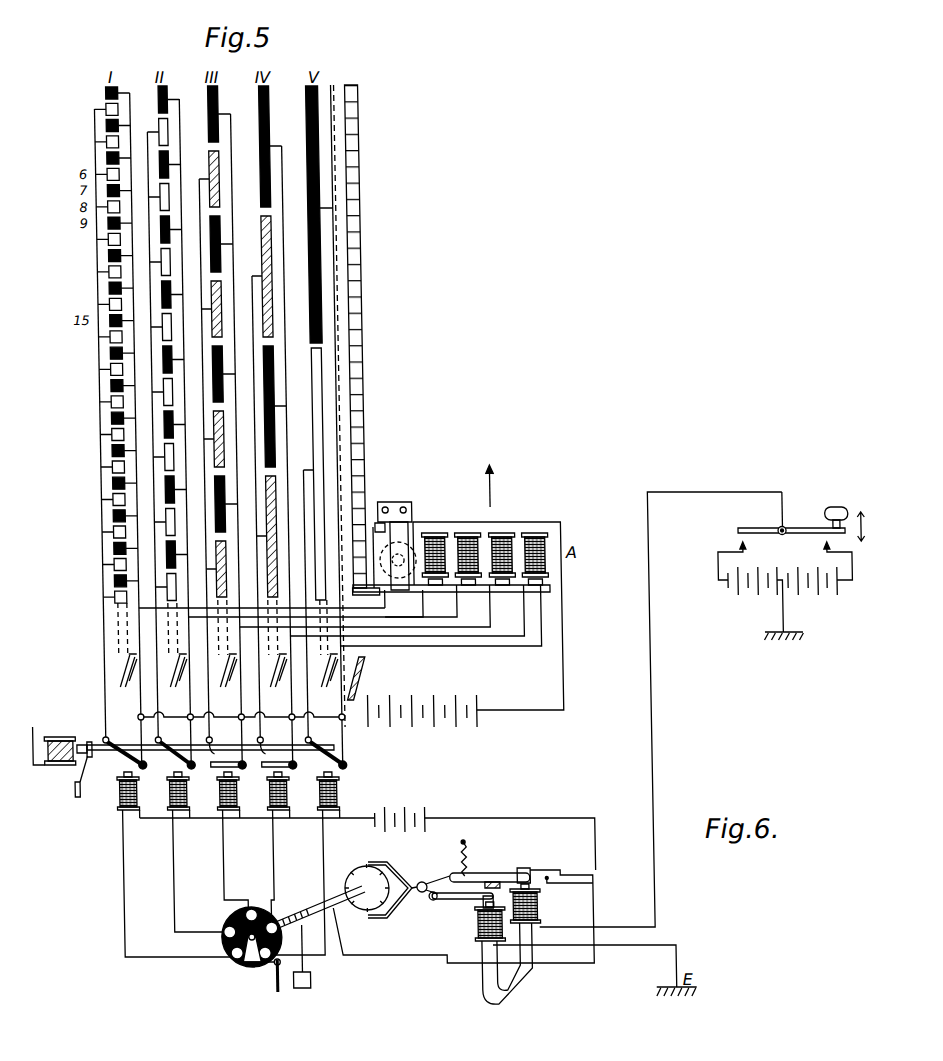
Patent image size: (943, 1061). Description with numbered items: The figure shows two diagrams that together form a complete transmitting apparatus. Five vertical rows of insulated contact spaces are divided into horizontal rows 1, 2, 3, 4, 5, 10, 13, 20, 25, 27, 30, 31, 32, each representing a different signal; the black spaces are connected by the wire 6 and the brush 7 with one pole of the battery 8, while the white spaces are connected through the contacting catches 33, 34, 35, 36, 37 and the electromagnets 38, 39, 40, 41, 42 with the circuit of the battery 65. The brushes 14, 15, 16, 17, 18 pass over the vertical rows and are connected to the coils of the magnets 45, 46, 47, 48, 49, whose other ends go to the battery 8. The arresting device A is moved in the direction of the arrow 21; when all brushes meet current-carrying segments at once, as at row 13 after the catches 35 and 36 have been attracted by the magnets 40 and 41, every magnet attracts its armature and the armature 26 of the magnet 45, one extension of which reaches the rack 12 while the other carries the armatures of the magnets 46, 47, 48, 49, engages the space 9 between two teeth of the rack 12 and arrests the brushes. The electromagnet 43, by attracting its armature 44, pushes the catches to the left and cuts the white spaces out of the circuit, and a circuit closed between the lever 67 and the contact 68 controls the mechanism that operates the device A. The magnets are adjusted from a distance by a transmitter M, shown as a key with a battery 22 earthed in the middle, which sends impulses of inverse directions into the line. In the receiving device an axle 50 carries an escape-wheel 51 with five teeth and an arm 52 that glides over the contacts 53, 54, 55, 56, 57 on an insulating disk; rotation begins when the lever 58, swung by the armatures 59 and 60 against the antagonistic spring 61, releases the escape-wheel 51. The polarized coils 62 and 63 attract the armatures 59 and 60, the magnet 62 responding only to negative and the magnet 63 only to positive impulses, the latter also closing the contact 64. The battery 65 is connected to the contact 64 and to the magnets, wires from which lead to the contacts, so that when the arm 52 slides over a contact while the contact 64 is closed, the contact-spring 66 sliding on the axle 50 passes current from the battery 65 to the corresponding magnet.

In FIG. 5, the horizontal row 1 is at (103, 93).
In FIG. 5, the horizontal row 2 is at (98, 109).
In FIG. 5, the horizontal row 3 is at (104, 125).
In FIG. 5, the horizontal row 4 is at (98, 142).
In FIG. 5, the horizontal row 5 is at (104, 158).
In FIG. 5, the horizontal row 10 is at (96, 239).
In FIG. 5, the horizontal row 13 is at (103, 288).
In FIG. 5, the horizontal row 20 is at (99, 402).
In FIG. 5, the horizontal row 25 is at (106, 483).
In FIG. 5, the horizontal row 27 is at (107, 516).
In FIG. 5, the horizontal row 30 is at (101, 564).
In FIG. 5, the horizontal row 31 is at (108, 581).
In FIG. 5, the horizontal row 32 is at (102, 597).
In FIG. 5, the wire 6 is at (129, 363).
In FIG. 5, the brush 7 is at (352, 681).
In FIG. 5, the battery 8 is at (422, 701).
In FIG. 5, the space between two teeth of the rack 9 is at (357, 350).
In FIG. 5, the rack 12 is at (357, 490).
In FIG. 5, the spring or brush 14 is at (125, 682).
In FIG. 5, the spring or brush 15 is at (175, 681).
In FIG. 5, the spring or brush 16 is at (225, 681).
In FIG. 5, the spring or brush 17 is at (275, 681).
In FIG. 5, the spring or brush 18 is at (325, 681).
In FIG. 5, the arrow 21 is at (500, 486).
In FIG. 6, the battery 22 is at (791, 566).
In FIG. 5, the armature 26 is at (390, 530).
In FIG. 5, the contacting catch 33 is at (125, 750).
In FIG. 5, the contacting catch 34 is at (175, 750).
In FIG. 5, the contacting catch 35 is at (226, 750).
In FIG. 5, the contacting catch 36 is at (277, 750).
In FIG. 5, the contacting catch 37 is at (326, 750).
In FIG. 5, the electromagnet 38 is at (123, 798).
In FIG. 5, the electromagnet 39 is at (173, 798).
In FIG. 5, the electromagnet 40 is at (223, 798).
In FIG. 5, the electromagnet 41 is at (273, 798).
In FIG. 5, the electromagnet 42 is at (323, 798).
In FIG. 5, the electromagnet 43 is at (62, 744).
In FIG. 5, the armature 44 is at (92, 776).
In FIG. 5, the magnet 45 is at (392, 560).
In FIG. 5, the electromagnet 46 is at (427, 533).
In FIG. 5, the electromagnet 47 is at (460, 533).
In FIG. 5, the electromagnet 48 is at (494, 533).
In FIG. 5, the electromagnet 49 is at (527, 533).
In FIG. 5, the axle 50 is at (300, 905).
In FIG. 5, the escape-wheel 51 is at (367, 888).
In FIG. 5, the arm 52 is at (236, 965).
In FIG. 5, the contact 53 is at (218, 960).
In FIG. 5, the contact 54 is at (206, 936).
In FIG. 5, the contact 55 is at (228, 912).
In FIG. 5, the contact 56 is at (259, 922).
In FIG. 5, the contact 57 is at (256, 943).
In FIG. 5, the lever 58 is at (385, 858).
In FIG. 5, the armature 59 is at (458, 900).
In FIG. 5, the armature 60 is at (466, 875).
In FIG. 5, the antagonistic spring 61 is at (450, 846).
In FIG. 5, the coil 62 is at (458, 935).
In FIG. 5, the coil 63 is at (522, 918).
In FIG. 5, the contact 64 is at (540, 869).
In FIG. 5, the battery 65 is at (399, 809).
In FIG. 5, the contact-spring 66 is at (326, 938).
In FIG. 5, the lever 67 is at (257, 990).
In FIG. 5, the contact 68 is at (270, 992).